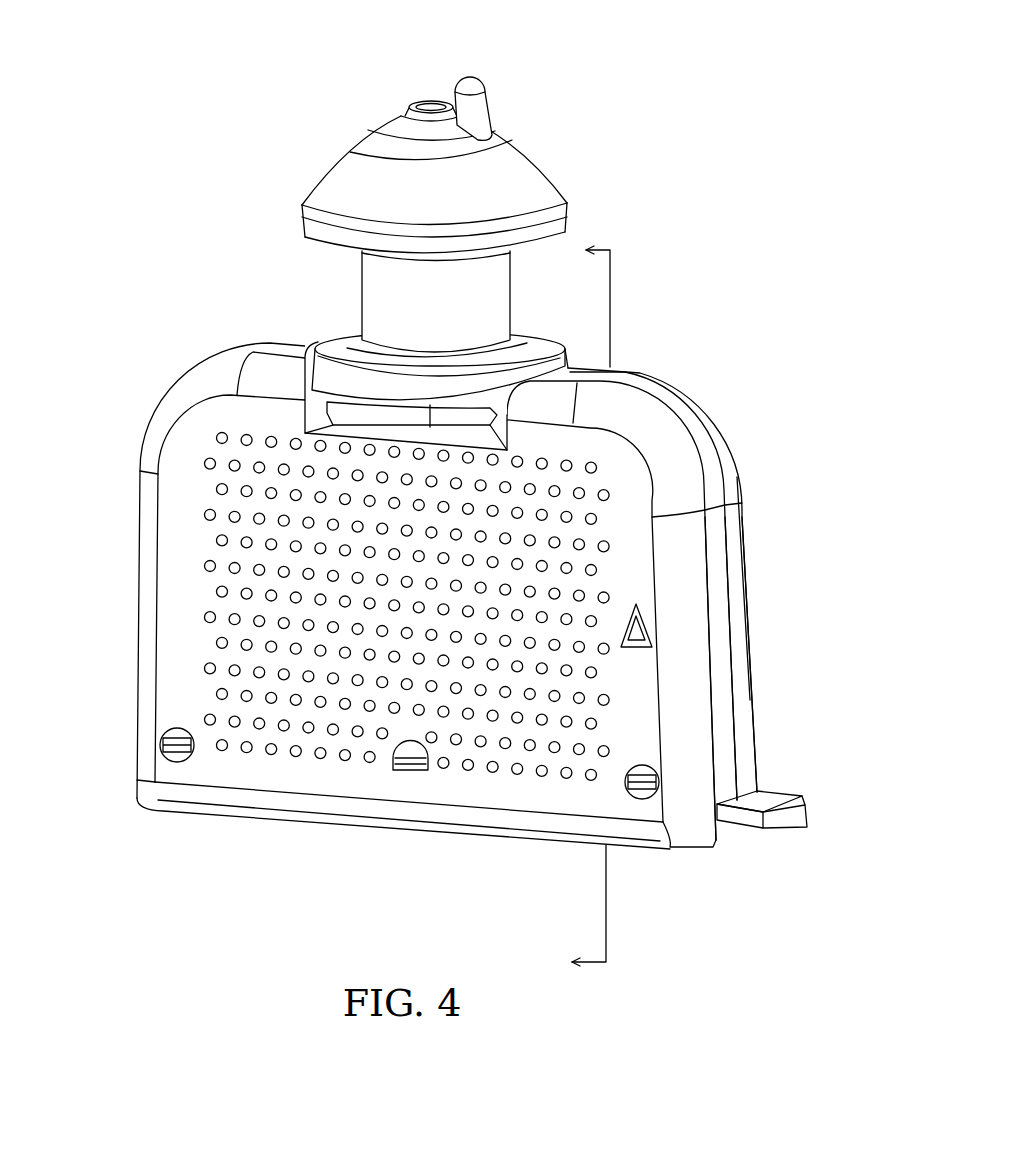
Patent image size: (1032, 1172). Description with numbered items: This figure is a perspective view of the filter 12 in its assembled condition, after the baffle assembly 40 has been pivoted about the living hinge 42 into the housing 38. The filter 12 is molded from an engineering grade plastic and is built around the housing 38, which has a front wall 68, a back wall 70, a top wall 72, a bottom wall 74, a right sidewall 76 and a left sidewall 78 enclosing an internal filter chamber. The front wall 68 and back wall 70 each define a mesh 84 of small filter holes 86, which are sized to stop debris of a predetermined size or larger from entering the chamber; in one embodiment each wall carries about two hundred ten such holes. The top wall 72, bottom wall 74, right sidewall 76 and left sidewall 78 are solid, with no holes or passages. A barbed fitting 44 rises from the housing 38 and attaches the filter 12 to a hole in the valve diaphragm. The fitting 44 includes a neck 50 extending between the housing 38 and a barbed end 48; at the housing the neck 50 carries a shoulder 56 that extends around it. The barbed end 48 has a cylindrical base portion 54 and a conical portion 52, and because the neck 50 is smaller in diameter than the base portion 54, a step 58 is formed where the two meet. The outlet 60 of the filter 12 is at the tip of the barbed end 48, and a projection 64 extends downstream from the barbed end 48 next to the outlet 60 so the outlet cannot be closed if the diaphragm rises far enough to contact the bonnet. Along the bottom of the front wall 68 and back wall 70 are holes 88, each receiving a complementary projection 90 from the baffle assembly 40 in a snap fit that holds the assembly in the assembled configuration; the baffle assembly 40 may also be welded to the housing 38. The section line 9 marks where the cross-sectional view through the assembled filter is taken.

The section line 9- 9 is at (591, 607).
The filter 12 is at (743, 190).
The housing 38 is at (745, 478).
The baffle assembly 40 is at (549, 848).
The living hinge 42 is at (810, 800).
The barbed fitting 44 is at (552, 187).
The barbed end 48 is at (515, 168).
The neck 50 is at (513, 283).
The conical portion 52 is at (455, 201).
The cylindrical base portion 54 is at (302, 227).
The shoulder 56 is at (533, 343).
The step 58 is at (322, 250).
The outlet 60 is at (430, 102).
The projection 64 is at (492, 96).
The front wall 68 is at (165, 576).
The back wall 70 is at (749, 625).
The top wall 72 is at (640, 375).
The bottom wall 74 is at (432, 832).
The right sidewall 76 is at (744, 708).
The left sidewall 78 is at (140, 500).
The mesh 84 is at (350, 636).
The filter holes 86 is at (275, 754).
The holes 88 is at (630, 766).
The projection 90 is at (648, 797).